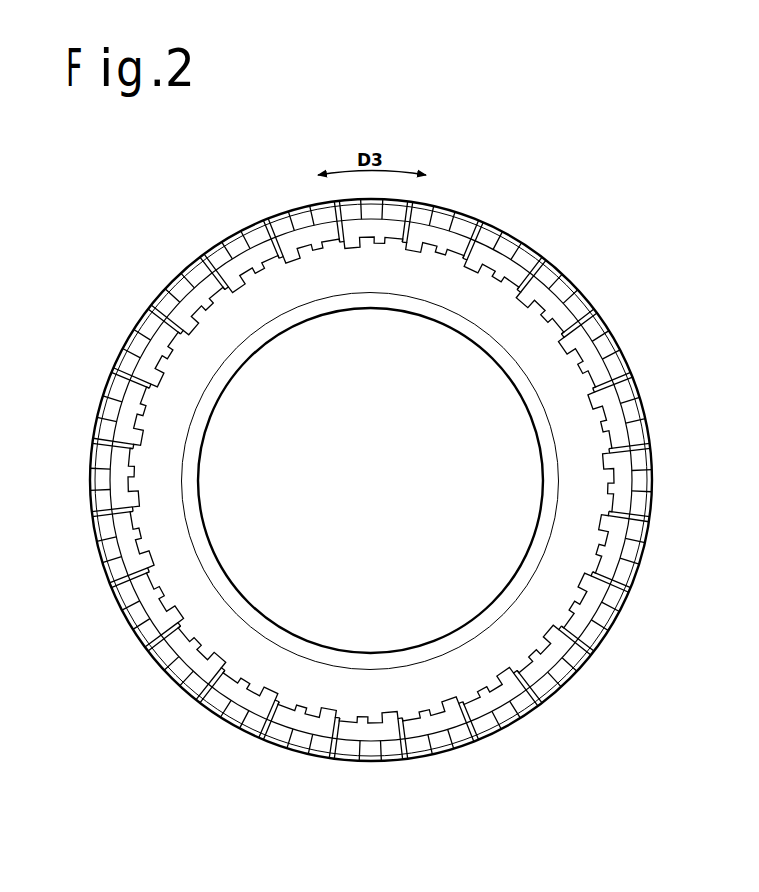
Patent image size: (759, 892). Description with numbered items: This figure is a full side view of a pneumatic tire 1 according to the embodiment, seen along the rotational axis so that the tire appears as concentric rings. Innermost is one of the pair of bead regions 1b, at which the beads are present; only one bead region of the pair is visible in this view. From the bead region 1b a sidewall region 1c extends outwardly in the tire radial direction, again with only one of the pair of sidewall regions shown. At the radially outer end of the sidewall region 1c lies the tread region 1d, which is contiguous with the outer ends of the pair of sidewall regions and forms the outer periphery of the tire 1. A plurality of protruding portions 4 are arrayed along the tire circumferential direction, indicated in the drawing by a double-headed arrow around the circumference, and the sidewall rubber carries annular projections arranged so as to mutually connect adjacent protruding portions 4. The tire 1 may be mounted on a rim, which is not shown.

The tire 1 is at (592, 174).
The bead region 1b is at (203, 430).
The sidewall region 1c is at (583, 484).
The tread region 1d is at (247, 230).
The protruding portion 4 is at (302, 246).